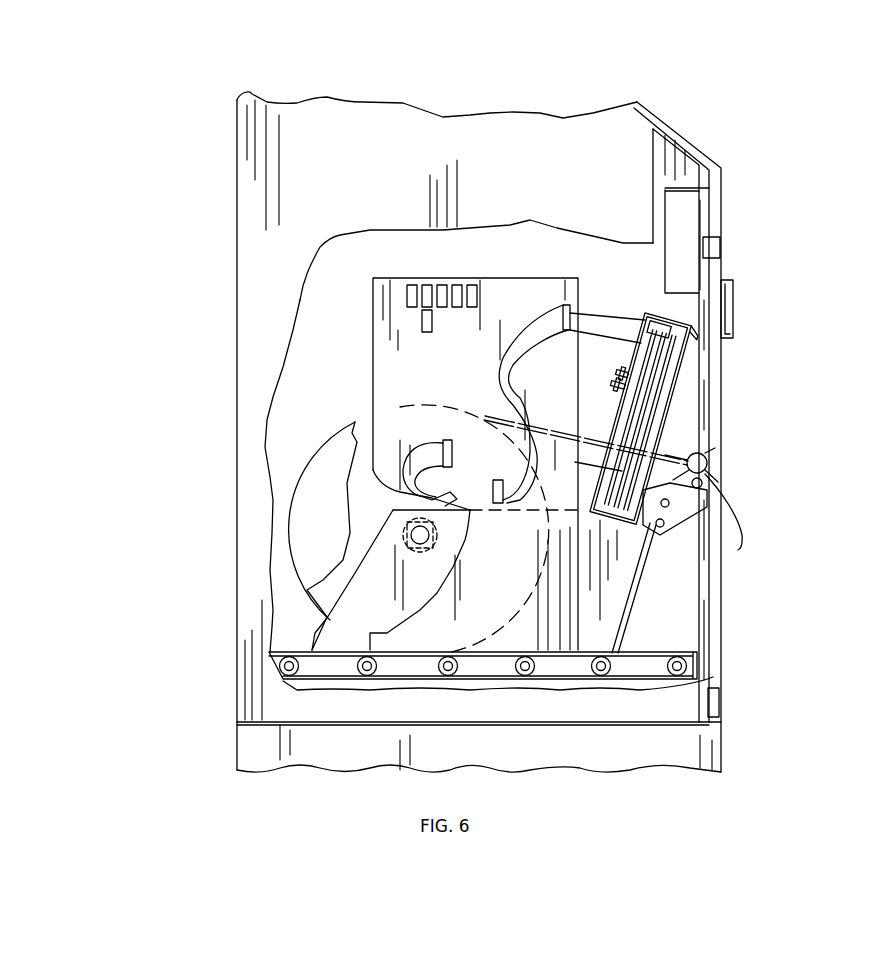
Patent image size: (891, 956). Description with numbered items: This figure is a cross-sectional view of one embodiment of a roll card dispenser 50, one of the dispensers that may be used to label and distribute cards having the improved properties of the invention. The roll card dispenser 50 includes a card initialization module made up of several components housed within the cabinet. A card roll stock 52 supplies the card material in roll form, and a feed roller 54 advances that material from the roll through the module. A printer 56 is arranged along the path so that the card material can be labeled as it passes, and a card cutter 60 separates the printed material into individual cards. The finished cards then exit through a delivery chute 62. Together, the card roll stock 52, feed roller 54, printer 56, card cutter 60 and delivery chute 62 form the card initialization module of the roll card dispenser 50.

The roll card dispenser 50 is at (760, 126).
The card roll stock 52 is at (312, 500).
The feed roller 54 is at (418, 550).
The printer 56 is at (683, 386).
The card cutter 60 is at (705, 457).
The delivery chute 62 is at (723, 466).